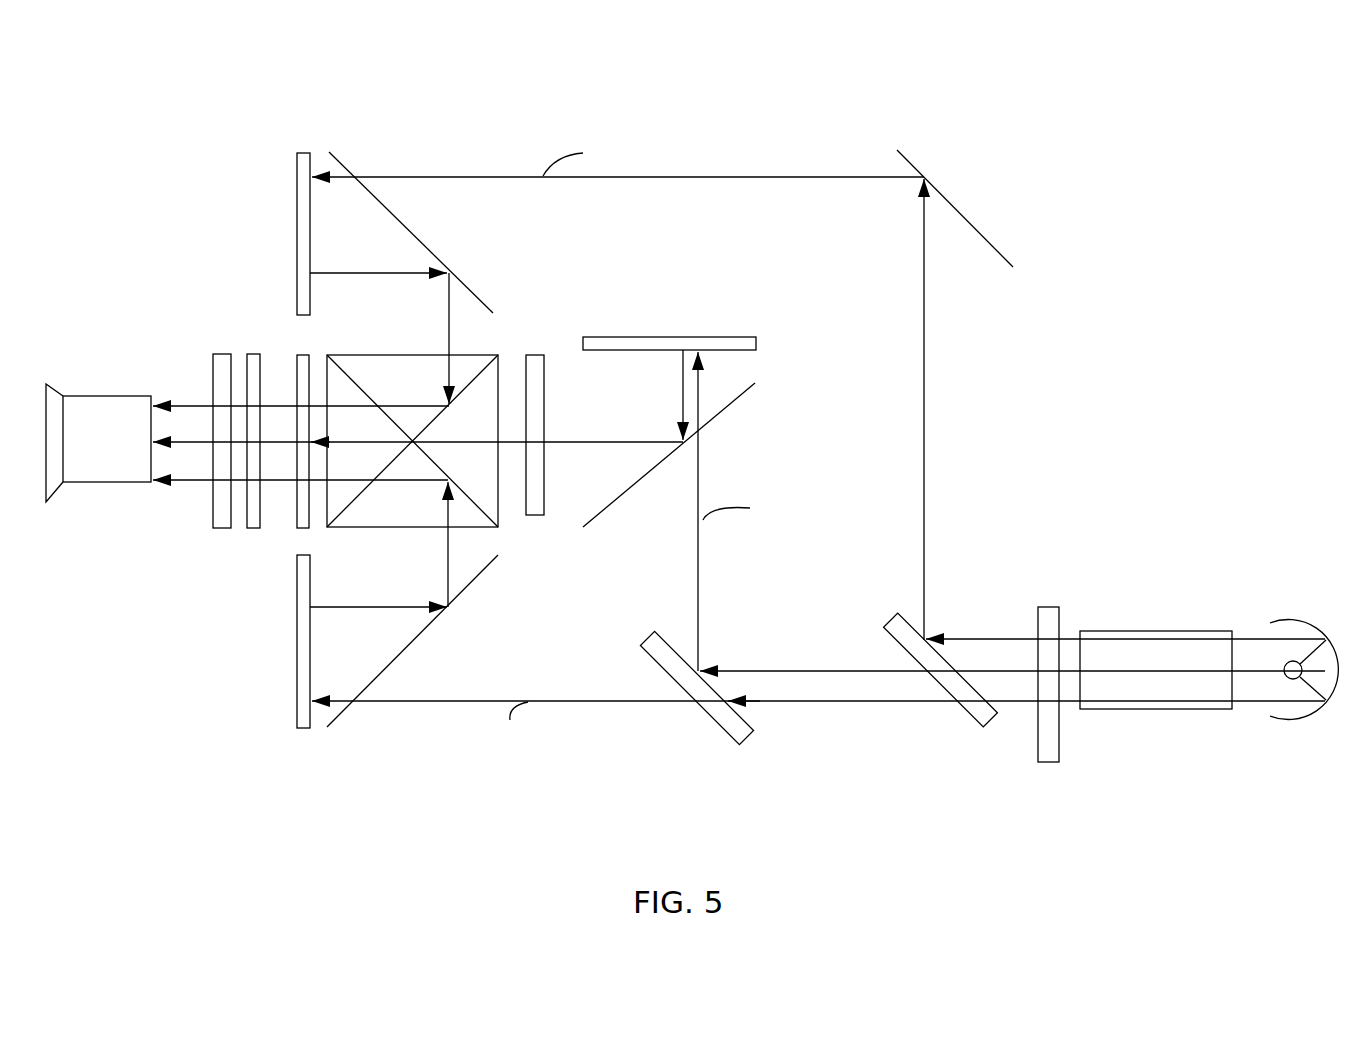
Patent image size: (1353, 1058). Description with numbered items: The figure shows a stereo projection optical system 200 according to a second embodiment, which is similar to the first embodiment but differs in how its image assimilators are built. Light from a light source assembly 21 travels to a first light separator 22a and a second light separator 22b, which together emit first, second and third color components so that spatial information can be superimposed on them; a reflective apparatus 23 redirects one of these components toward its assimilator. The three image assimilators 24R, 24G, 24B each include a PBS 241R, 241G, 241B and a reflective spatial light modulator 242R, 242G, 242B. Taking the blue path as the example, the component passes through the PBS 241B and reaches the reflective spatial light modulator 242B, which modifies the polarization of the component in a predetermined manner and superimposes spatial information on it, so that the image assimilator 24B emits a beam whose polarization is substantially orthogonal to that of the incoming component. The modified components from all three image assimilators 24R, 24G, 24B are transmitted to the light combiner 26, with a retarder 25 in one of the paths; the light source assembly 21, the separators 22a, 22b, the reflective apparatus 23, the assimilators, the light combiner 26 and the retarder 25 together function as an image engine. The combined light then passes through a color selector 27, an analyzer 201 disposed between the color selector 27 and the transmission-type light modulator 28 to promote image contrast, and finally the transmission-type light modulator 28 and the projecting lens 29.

The stereo projection optical system 200 is at (723, 92).
The light source assembly 21 is at (1202, 597).
The first light separator 22a is at (978, 717).
The second light separator 22b is at (735, 728).
The reflective apparatus 23 is at (980, 232).
The image assimilator 24B is at (385, 97).
The PBS 241B is at (350, 167).
The reflective spatial light modulator 242B is at (298, 160).
The image assimilator 24G is at (838, 343).
The PBS 241G is at (755, 390).
The reflective spatial light modulator 242G is at (755, 350).
The image assimilator 24R is at (375, 787).
The PBS 241R is at (330, 722).
The reflective spatial light modulator 242R is at (300, 720).
The retarder 25 is at (537, 420).
The light combiner 26 is at (457, 362).
The color selector 27 is at (308, 357).
The transmission-type light modulator 28 is at (218, 373).
The analyzer 201 is at (252, 357).
The projecting lens 29 is at (98, 378).